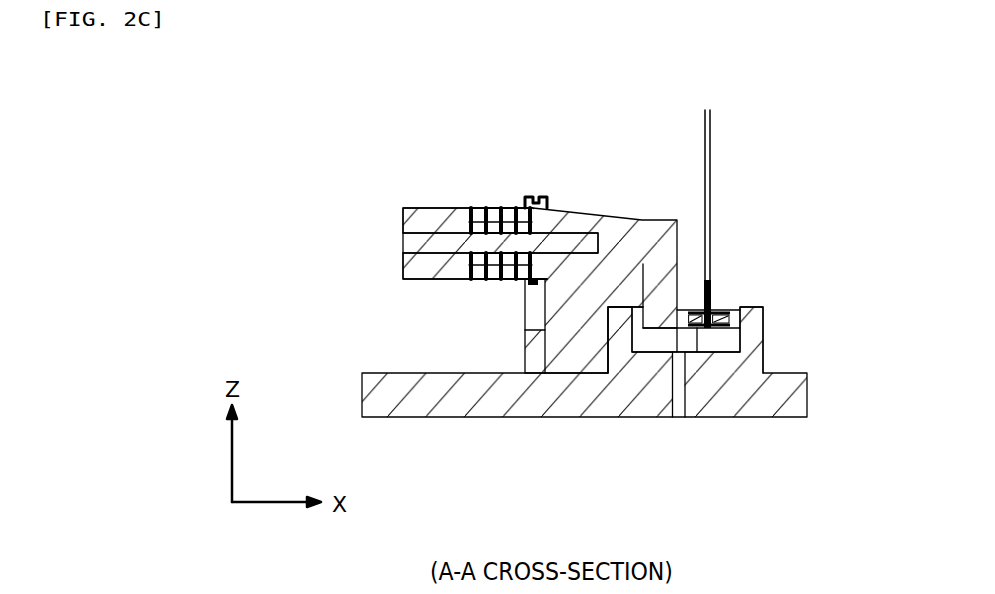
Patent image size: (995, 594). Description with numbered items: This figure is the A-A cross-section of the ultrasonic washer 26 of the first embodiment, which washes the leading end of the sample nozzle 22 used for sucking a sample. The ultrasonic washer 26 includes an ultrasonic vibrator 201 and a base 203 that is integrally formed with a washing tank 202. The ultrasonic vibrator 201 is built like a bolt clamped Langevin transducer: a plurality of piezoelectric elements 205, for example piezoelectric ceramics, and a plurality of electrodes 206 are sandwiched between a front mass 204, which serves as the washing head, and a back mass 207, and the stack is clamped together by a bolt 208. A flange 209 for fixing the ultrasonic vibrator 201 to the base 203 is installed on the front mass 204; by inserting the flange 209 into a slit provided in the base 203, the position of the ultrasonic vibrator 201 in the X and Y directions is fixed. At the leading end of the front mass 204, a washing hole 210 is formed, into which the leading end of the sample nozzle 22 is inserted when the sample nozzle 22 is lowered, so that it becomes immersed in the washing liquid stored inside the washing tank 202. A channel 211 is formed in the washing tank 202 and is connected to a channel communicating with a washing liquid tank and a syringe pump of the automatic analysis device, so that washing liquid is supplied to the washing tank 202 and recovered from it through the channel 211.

The ultrasonic vibrator 201 is at (484, 286).
The washing tank 202 is at (713, 338).
The base 203 is at (572, 407).
The front mass 204 is at (606, 216).
The piezoelectric elements 205 is at (478, 207).
The electrodes 206 is at (462, 279).
The back mass 207 is at (402, 218).
The bolt 208 is at (402, 242).
The flange 209 is at (535, 196).
The washing hole 210 is at (715, 303).
The channel 211 is at (675, 418).
The sample nozzle 22 is at (711, 168).
The ultrasonic washer 26 is at (825, 206).